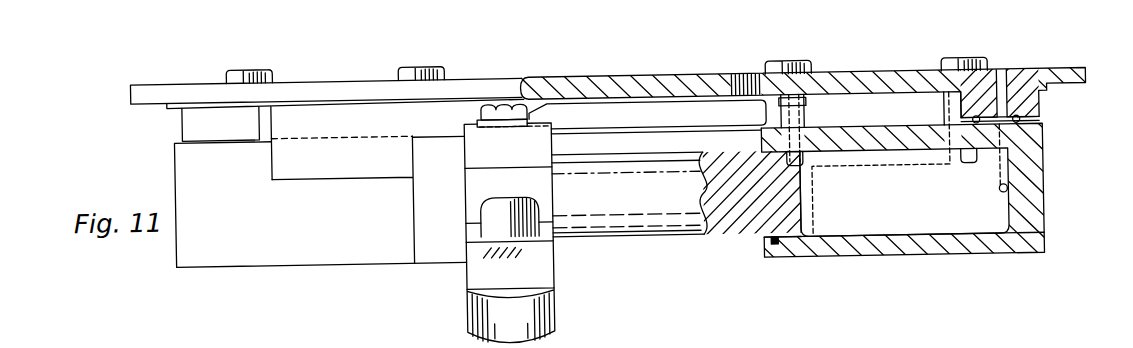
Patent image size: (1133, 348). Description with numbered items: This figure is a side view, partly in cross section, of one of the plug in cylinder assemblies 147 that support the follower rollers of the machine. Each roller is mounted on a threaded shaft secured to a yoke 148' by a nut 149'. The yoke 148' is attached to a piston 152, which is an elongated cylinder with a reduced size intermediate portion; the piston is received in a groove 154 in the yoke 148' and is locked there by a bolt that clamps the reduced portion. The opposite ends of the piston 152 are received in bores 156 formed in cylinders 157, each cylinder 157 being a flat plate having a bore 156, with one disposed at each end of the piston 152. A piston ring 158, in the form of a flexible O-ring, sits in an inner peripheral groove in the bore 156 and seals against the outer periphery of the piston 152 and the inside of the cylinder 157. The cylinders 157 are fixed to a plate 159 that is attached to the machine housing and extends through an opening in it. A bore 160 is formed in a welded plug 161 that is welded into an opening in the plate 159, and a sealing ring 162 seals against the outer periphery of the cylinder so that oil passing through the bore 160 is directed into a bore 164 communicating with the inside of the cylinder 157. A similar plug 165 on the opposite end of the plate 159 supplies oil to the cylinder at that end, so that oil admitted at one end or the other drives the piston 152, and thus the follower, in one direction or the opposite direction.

The plug in cylinder assembly 147 is at (1054, 189).
The yoke 148' is at (491, 208).
The nut 149' is at (493, 162).
The piston 152 is at (677, 241).
The groove 154 is at (550, 317).
The bore 156 is at (916, 234).
The cylinder 157 is at (285, 257).
The piston ring 158 is at (774, 246).
The plate 159 is at (1090, 77).
The bore 160 is at (1007, 77).
The welded plug 161 is at (1039, 104).
The sealing ring 162 is at (1022, 126).
The bore 164 is at (999, 195).
The plug 165 is at (184, 115).